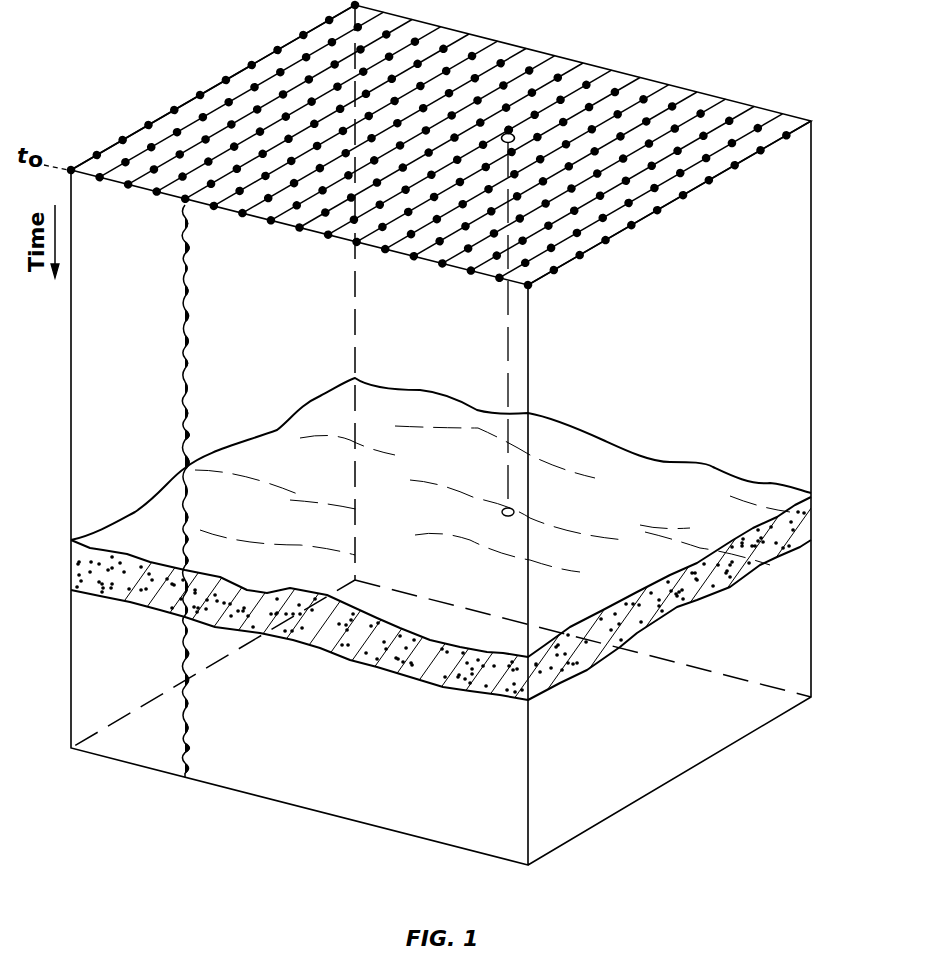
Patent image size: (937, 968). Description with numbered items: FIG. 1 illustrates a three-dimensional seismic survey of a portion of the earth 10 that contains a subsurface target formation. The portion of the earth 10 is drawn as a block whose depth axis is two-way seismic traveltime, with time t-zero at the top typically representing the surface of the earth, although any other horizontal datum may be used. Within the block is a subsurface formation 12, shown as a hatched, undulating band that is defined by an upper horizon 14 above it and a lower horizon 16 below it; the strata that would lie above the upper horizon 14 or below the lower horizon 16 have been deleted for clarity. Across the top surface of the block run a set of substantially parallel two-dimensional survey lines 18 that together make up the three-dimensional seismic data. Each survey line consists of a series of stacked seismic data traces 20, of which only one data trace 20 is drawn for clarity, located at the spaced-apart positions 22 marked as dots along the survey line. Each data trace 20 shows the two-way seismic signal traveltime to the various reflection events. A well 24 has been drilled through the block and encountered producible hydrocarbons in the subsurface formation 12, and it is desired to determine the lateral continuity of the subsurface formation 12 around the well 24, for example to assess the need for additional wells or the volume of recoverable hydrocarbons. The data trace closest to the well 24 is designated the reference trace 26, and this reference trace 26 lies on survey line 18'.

The portion of the earth 10 is at (820, 248).
The subsurface formation 12 is at (792, 528).
The upper horizon 14 is at (811, 496).
The lower horizon 16 is at (803, 542).
The survey lines 18 is at (468, 145).
The survey line 18' is at (640, 162).
The seismic data trace 20 is at (185, 350).
The spaced-apart positions 22 is at (253, 62).
The well 24 is at (514, 128).
The reference trace 26 is at (512, 134).